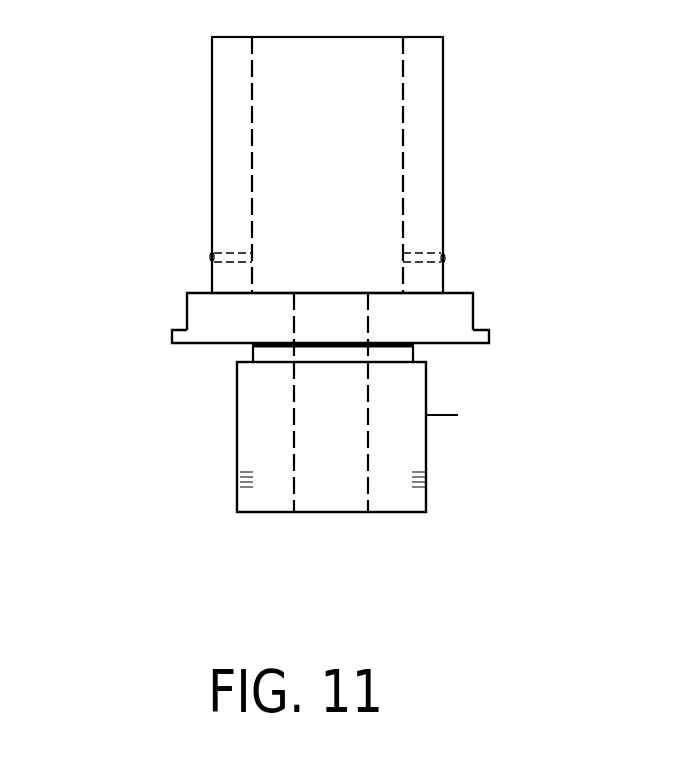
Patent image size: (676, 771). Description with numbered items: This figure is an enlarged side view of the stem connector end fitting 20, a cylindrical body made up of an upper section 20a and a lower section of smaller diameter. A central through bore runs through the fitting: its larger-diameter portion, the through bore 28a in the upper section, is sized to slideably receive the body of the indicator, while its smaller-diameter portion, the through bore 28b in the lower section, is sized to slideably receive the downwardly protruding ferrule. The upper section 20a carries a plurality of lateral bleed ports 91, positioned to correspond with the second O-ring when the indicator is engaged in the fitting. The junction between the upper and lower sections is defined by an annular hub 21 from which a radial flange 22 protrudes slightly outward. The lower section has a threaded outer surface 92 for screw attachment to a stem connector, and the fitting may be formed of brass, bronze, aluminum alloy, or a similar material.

The stem connector end fitting 20 is at (126, 111).
The upper section 20a is at (443, 116).
The through bore in the upper section 28a is at (344, 208).
The lateral bleed ports 91 is at (210, 257).
The annular hub 21 is at (471, 292).
The radial flange 22 is at (170, 337).
The threaded outer surface 92 is at (236, 480).
The through bore in the lower section 28b is at (357, 463).